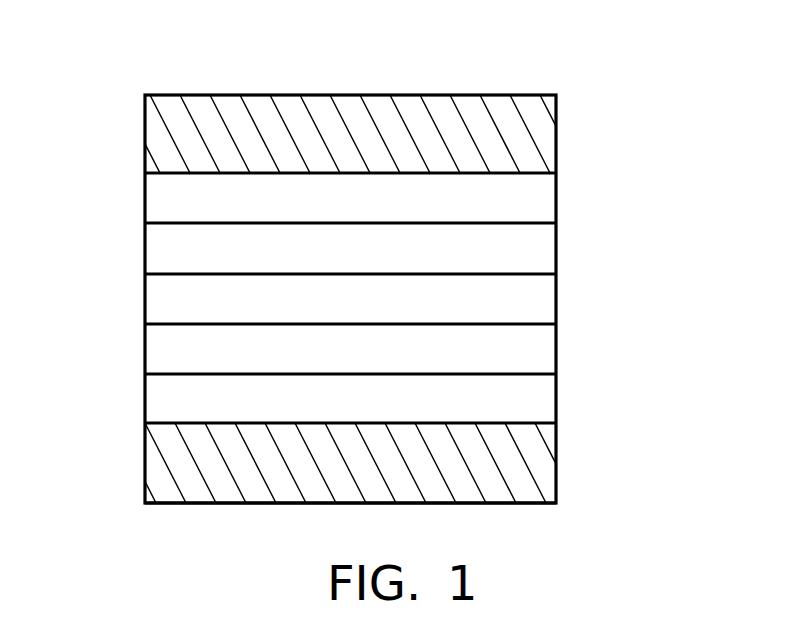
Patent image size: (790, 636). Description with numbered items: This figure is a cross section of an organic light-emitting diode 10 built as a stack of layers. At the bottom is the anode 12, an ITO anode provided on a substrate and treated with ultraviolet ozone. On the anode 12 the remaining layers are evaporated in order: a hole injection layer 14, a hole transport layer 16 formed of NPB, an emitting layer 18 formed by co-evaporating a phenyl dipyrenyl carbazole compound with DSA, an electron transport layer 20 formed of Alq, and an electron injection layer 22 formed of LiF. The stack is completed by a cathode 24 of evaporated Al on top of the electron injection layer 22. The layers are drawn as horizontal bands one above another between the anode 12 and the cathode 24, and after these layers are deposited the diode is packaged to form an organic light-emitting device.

The layered structure 10 is at (73, 30).
The anode 12 is at (540, 469).
The hole injection layer 14 is at (540, 403).
The hole transport layer 16 is at (540, 353).
The emitting layer 18 is at (540, 303).
The electron transport layer 20 is at (540, 253).
The electron injection layer 22 is at (540, 200).
The cathode 24 is at (540, 137).